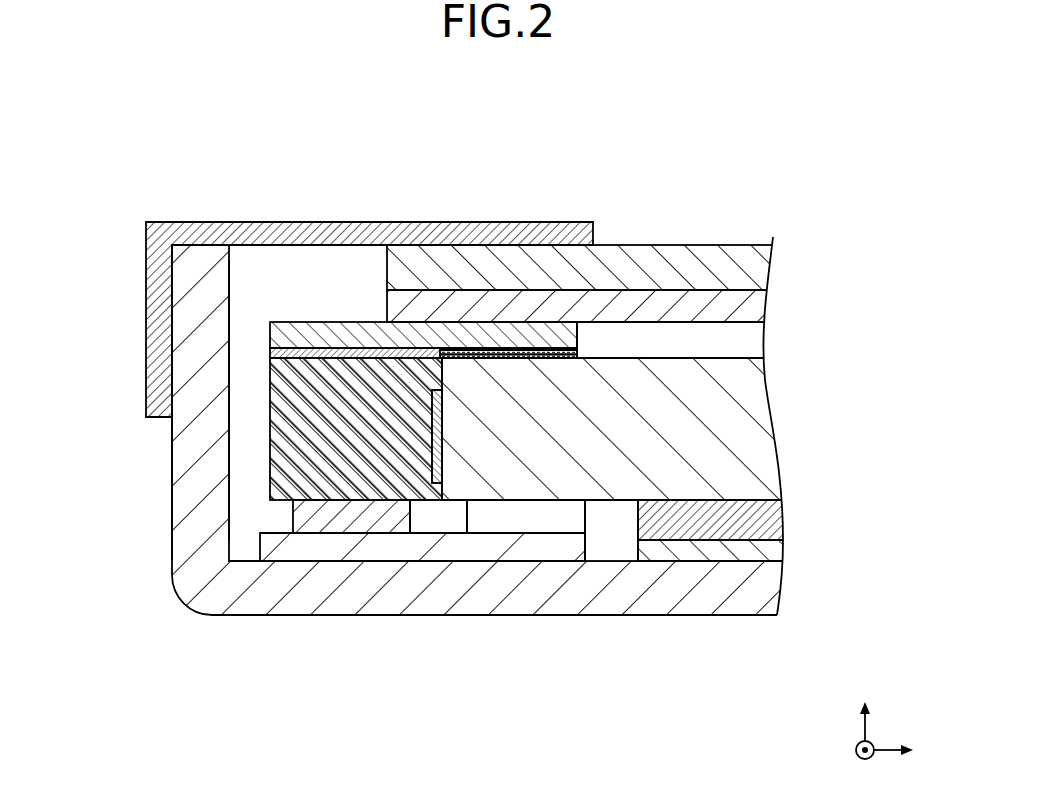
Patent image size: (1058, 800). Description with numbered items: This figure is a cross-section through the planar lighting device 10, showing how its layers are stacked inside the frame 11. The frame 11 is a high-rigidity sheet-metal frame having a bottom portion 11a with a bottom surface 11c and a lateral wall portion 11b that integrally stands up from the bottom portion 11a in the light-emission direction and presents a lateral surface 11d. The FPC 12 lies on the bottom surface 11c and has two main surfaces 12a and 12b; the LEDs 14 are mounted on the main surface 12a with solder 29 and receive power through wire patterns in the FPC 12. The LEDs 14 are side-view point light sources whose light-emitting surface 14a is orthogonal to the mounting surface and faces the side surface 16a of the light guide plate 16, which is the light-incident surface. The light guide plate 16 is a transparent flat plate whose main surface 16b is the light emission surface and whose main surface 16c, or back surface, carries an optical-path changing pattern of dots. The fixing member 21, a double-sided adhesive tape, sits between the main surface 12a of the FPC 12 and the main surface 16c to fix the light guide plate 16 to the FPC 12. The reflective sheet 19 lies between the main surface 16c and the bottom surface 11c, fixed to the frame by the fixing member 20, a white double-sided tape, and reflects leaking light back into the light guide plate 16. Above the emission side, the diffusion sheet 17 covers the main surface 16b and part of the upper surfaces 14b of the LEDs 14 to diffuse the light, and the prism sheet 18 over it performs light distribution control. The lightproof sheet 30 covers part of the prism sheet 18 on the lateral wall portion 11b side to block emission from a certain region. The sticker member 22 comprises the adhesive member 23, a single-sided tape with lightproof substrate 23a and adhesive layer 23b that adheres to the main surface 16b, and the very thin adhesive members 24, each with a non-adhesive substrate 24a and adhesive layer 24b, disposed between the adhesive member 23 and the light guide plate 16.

The planar lighting device 10 is at (814, 205).
The frame 11 is at (430, 481).
The bottom portion 11a is at (618, 592).
The lateral wall portion 11b is at (185, 435).
The bottom surface 11c is at (603, 558).
The lateral surface 11d is at (231, 309).
The FPC 12 is at (396, 620).
The main surface 12a is at (268, 533).
The main surface 12b is at (300, 562).
The LEDs 14 is at (285, 438).
The light-emitting surface 14a is at (440, 370).
The upper surfaces 14b is at (297, 357).
The light guide plate 16 is at (650, 341).
The side surface 16a is at (443, 362).
The main surface 16b is at (655, 357).
The main surface 16c is at (690, 500).
The diffusion sheet 17 is at (752, 306).
The prism sheet 18 is at (758, 265).
The reflective sheet 19 is at (767, 512).
The fixing member 20 is at (768, 552).
The fixing member 21 is at (525, 515).
The sticker member 22 is at (332, 130).
The adhesive member 23 is at (295, 174).
The substrate 23a is at (310, 336).
The adhesive layer 23b is at (370, 352).
The adhesive members 24 is at (465, 180).
The substrate 24a is at (545, 357).
The adhesive layer 24b is at (479, 351).
The solder 29 is at (323, 510).
The lightproof sheet 30 is at (152, 368).